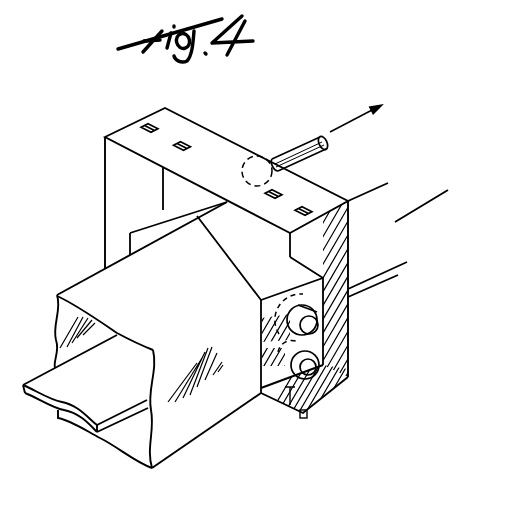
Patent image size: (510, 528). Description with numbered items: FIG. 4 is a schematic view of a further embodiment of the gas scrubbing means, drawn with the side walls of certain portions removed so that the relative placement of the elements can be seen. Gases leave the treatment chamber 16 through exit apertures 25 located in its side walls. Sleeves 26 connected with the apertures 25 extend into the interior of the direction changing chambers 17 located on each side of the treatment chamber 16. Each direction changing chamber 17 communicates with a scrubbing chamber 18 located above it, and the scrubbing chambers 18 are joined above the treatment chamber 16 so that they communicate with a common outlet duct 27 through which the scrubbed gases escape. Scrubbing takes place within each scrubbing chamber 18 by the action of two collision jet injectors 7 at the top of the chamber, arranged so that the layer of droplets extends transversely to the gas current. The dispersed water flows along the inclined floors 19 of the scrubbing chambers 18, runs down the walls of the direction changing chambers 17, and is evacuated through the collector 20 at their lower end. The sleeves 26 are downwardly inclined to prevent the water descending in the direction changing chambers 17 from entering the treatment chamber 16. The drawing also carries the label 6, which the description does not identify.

The flange / lower layer of flat cable 6 is at (48, 372).
The collision jet injectors 7 is at (156, 126).
The treatment chamber 16 is at (88, 278).
The direction changing chambers 17 is at (104, 168).
The scrubbing chambers 18 is at (155, 182).
The inclined floors 19 is at (160, 228).
The collector 20 is at (366, 411).
The exit apertures 25 is at (283, 350).
The sleeves 26 is at (320, 328).
The common outlet duct 27 is at (292, 150).